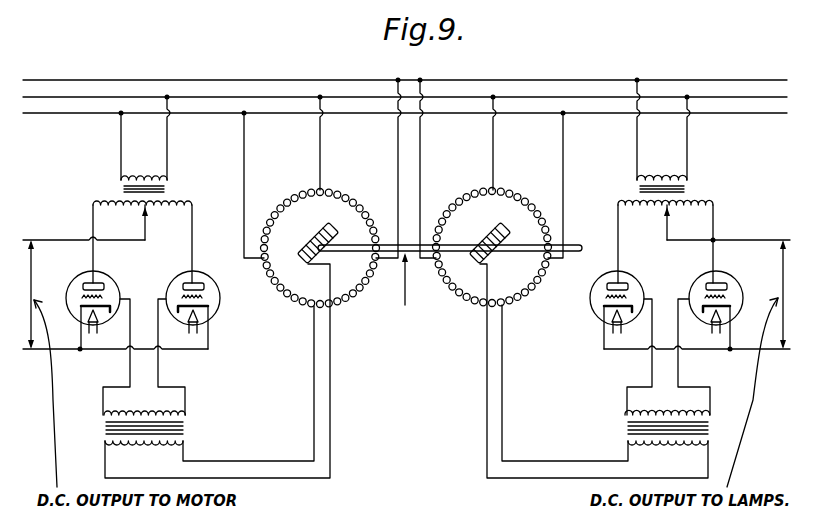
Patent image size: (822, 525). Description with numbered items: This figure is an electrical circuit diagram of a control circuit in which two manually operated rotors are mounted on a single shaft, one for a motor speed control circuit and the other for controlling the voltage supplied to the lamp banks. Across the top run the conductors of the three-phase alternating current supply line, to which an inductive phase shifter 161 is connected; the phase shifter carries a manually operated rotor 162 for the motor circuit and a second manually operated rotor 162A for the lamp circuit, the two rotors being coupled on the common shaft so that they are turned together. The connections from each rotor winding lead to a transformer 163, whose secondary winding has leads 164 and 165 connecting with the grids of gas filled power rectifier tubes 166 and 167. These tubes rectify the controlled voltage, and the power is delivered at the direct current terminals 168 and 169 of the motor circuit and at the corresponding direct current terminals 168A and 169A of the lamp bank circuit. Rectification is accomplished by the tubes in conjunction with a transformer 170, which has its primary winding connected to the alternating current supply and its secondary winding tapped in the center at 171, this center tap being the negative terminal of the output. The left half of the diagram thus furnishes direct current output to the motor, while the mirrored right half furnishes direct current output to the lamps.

The inductive phase shifter 161 is at (514, 300).
The manually operated rotor 162 is at (318, 232).
The manually operated rotor 162A is at (490, 232).
The transformer 163 is at (186, 430).
The lead 164 is at (103, 392).
The lead 165 is at (188, 393).
The gas filled power rectifier tube 166 is at (109, 290).
The gas filled power rectifier tube 167 is at (200, 280).
The direct current terminal 168 is at (62, 238).
The direct current terminal 168A is at (755, 239).
The direct current terminal 169 is at (43, 352).
The direct current terminal 169A is at (774, 353).
The transformer 170 is at (172, 187).
The center tap 171 is at (665, 226).